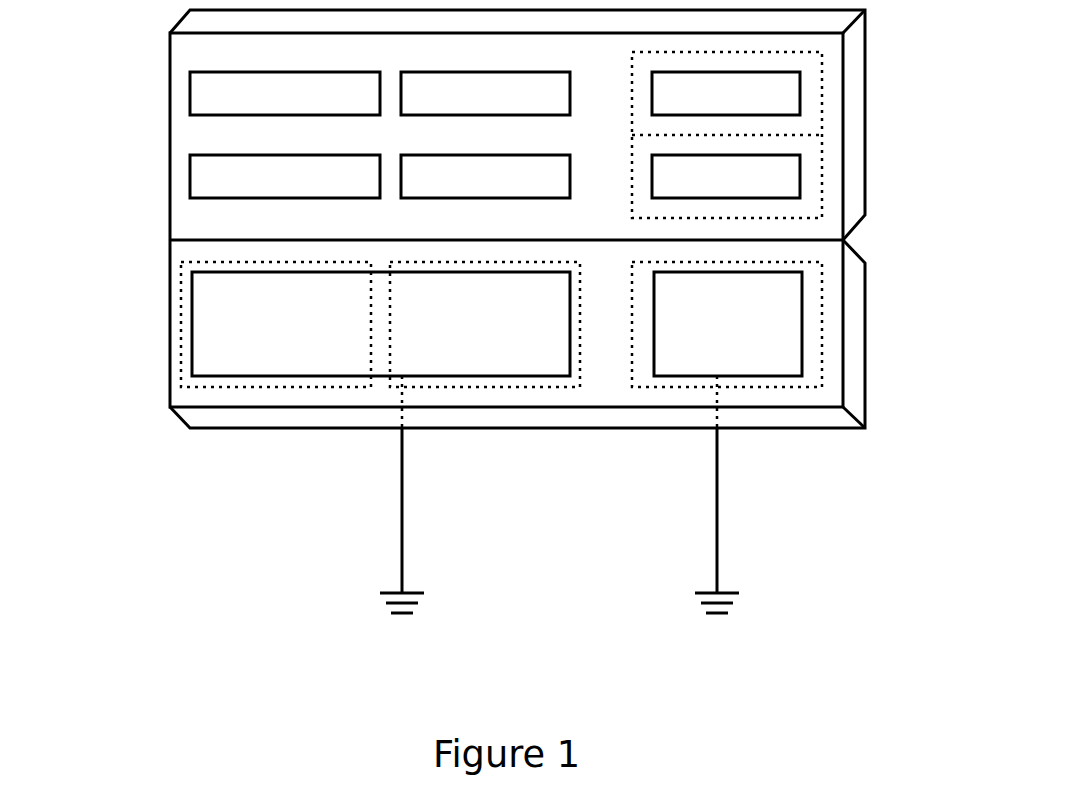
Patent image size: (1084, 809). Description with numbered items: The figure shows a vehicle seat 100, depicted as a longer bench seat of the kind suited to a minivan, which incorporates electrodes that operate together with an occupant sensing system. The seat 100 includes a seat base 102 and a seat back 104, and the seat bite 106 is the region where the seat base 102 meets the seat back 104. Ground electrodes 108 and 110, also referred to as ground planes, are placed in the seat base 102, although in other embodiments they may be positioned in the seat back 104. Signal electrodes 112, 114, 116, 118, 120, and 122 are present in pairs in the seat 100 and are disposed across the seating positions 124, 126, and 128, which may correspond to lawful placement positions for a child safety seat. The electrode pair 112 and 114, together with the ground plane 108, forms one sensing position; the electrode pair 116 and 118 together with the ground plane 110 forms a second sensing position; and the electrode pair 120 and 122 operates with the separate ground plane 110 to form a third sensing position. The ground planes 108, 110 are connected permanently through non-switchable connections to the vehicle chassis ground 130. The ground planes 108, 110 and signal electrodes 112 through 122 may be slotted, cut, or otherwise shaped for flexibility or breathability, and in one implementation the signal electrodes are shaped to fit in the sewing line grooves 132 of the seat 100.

The vehicle seat 100 is at (140, 498).
The seat base 102 is at (170, 347).
The seat back 104 is at (170, 75).
The seat bite 106 is at (170, 245).
The ground electrode 108 is at (560, 316).
The ground electrode 110 is at (790, 316).
The signal electrode 112 is at (370, 108).
The signal electrode 114 is at (370, 192).
The signal electrode 116 is at (560, 108).
The signal electrode 118 is at (560, 192).
The signal electrode 120 is at (790, 108).
The signal electrode 122 is at (790, 192).
The seating position 124 is at (235, 387).
The seating position 126 is at (527, 387).
The seating position 128 is at (778, 387).
The vehicle chassis ground 130 is at (402, 540).
The sewing line grooves 132 is at (786, 135).